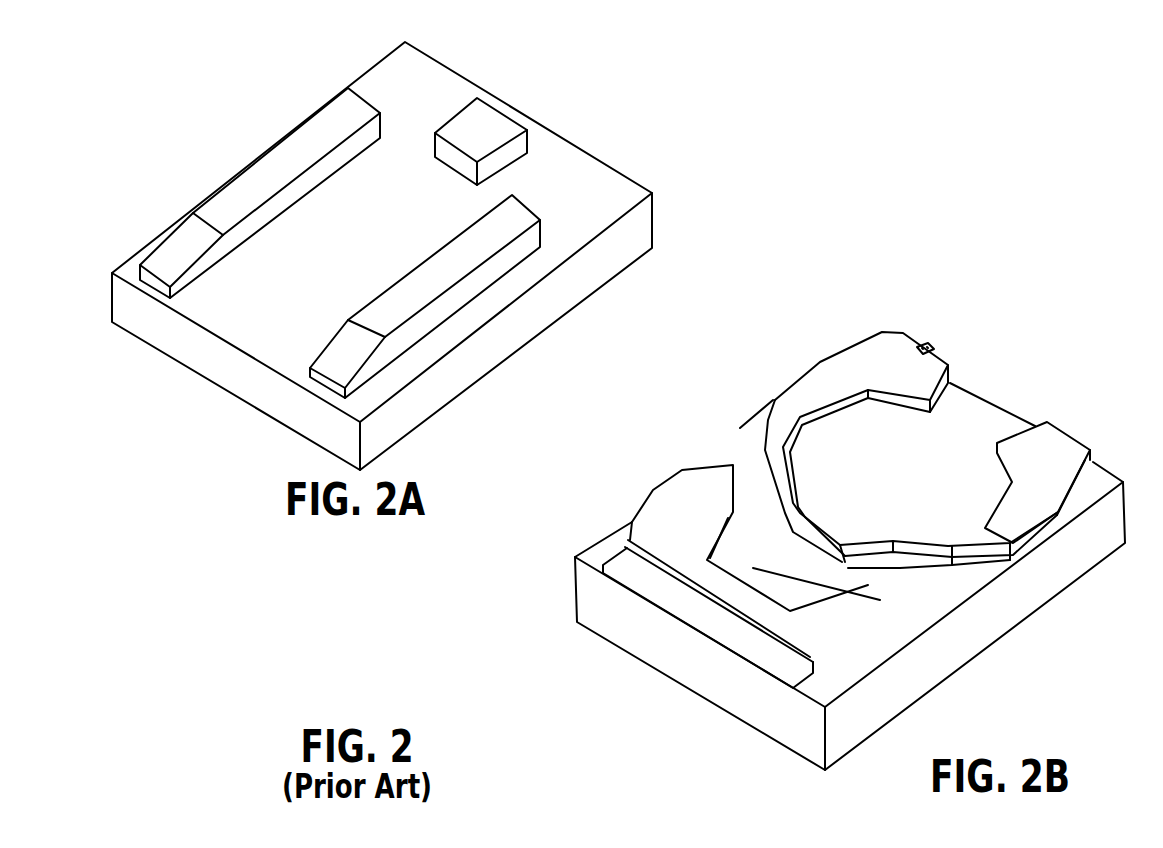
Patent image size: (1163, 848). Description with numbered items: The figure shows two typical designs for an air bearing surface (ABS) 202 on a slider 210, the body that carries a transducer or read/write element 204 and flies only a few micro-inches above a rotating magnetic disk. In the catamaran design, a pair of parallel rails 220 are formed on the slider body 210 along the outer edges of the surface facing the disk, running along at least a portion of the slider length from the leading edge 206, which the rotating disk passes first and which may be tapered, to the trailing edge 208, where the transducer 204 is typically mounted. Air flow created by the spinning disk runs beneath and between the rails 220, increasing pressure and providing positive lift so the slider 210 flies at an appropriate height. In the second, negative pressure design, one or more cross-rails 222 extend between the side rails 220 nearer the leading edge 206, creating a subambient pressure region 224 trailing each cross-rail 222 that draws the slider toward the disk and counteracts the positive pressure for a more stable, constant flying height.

In FIG. 2A, the air bearing surface 202 is at (572, 182).
In FIG. 2B, the transducer 204 is at (932, 347).
In FIG. 2A, the leading edge 206 is at (175, 332).
In FIG. 2B, the leading edge 206 is at (645, 637).
In FIG. 2A, the trailing edge 208 is at (490, 96).
In FIG. 2B, the trailing edge 208 is at (1000, 397).
In FIG. 2A, the slider 210 is at (600, 262).
In FIG. 2A, the rails 220 is at (485, 243).
In FIG. 2B, the rails 220 is at (793, 530).
In FIG. 2B, the cross-rail 222 is at (827, 530).
In FIG. 2B, the subambient pressure region 224 is at (853, 518).